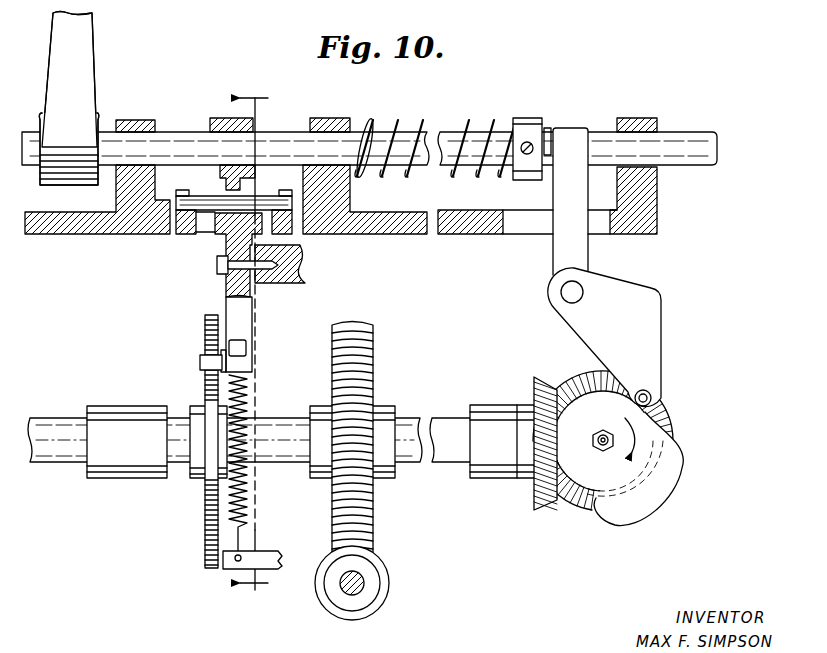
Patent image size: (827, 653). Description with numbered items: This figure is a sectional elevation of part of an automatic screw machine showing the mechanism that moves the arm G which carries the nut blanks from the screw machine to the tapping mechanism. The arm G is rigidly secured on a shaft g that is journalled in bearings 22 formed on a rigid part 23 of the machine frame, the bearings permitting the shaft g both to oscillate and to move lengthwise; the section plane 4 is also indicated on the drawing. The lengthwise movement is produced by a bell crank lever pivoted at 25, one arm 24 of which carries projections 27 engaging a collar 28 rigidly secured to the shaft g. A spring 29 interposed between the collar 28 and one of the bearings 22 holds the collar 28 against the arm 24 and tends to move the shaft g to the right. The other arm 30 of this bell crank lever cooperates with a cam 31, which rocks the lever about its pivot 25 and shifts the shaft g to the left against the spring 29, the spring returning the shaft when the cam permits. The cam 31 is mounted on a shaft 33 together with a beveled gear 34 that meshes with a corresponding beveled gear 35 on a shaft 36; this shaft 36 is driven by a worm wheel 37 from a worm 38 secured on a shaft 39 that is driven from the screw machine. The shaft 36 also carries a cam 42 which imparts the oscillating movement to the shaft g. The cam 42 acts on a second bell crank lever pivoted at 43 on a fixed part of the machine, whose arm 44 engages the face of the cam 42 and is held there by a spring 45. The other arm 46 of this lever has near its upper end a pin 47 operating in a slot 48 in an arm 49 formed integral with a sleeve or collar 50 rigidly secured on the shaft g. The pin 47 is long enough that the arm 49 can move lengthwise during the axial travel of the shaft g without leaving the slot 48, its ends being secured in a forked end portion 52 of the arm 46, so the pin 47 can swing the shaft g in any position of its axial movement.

The arm G is at (88, 43).
The shaft g is at (180, 130).
The bearings 22 is at (645, 118).
The sleeve or collar 50 is at (222, 118).
The section line 4- 4 is at (254, 345).
The spring 29 is at (420, 130).
The collar 28 is at (526, 118).
The projections 27 is at (548, 130).
The arm 24 is at (560, 252).
The rigid part of frame 23 is at (387, 230).
The arm 49 is at (227, 188).
The pin 47 is at (262, 198).
The forked end portion 52 is at (283, 215).
The slot 48 is at (230, 200).
The arm 46 is at (240, 240).
The pivot 43 is at (222, 270).
The arm 44 is at (245, 322).
The cam 42 is at (208, 330).
The spring 45 is at (250, 390).
The worm wheel 37 is at (366, 370).
The worm 38 is at (380, 580).
The shaft 39 is at (350, 590).
The shaft 36 is at (445, 430).
The beveled gear 34 is at (590, 380).
The cam 31 is at (680, 463).
The shaft 33 is at (600, 450).
The beveled gear 35 is at (540, 492).
The arm 30 is at (655, 355).
The pivot 25 is at (568, 296).